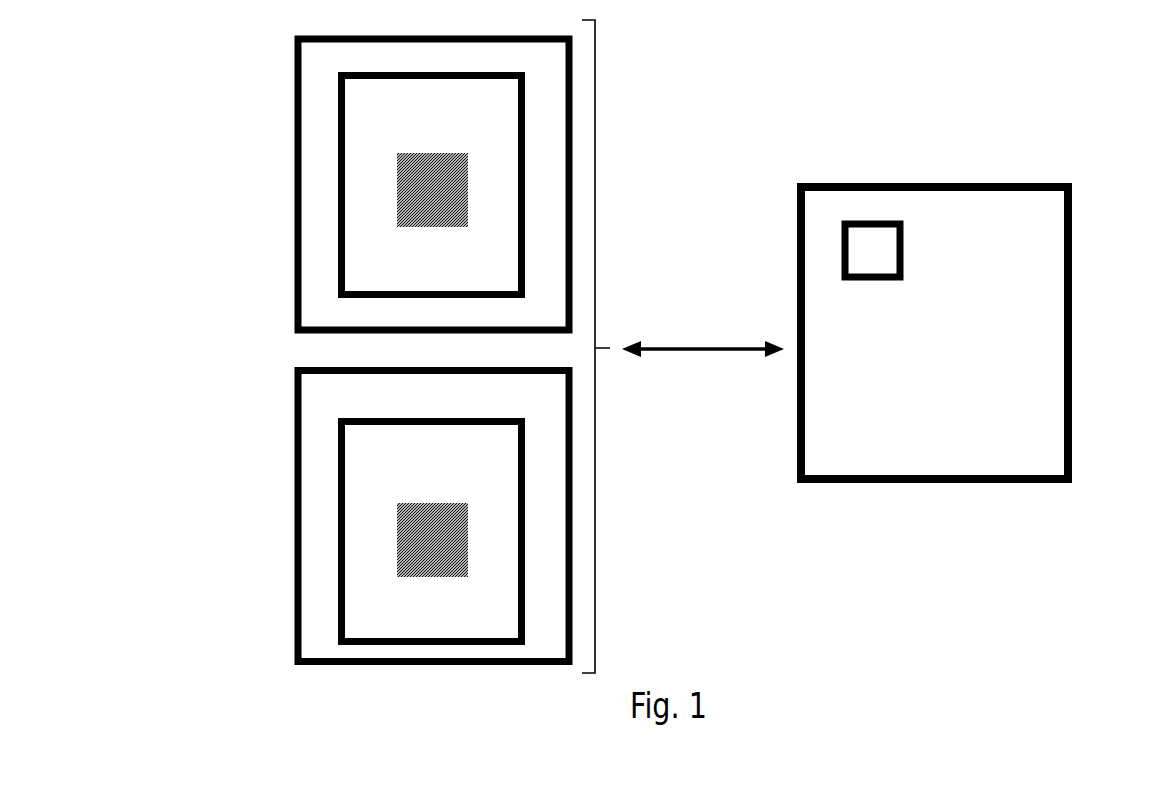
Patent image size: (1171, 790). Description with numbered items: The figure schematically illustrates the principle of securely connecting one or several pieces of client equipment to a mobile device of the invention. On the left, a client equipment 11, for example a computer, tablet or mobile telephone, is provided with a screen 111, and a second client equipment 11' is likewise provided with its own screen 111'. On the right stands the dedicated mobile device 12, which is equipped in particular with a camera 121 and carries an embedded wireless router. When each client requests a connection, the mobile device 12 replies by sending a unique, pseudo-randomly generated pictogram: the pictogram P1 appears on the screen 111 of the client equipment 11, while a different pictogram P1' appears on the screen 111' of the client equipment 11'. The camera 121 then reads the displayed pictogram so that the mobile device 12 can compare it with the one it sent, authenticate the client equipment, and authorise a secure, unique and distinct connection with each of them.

The client equipment 11 is at (394, 184).
The screen 111 is at (365, 185).
The pictogram P1 is at (343, 190).
The client equipment 11' is at (391, 516).
The screen 111' is at (361, 532).
The pictogram P1' is at (339, 540).
The mobile device 12 is at (1033, 228).
The camera 121 is at (872, 248).